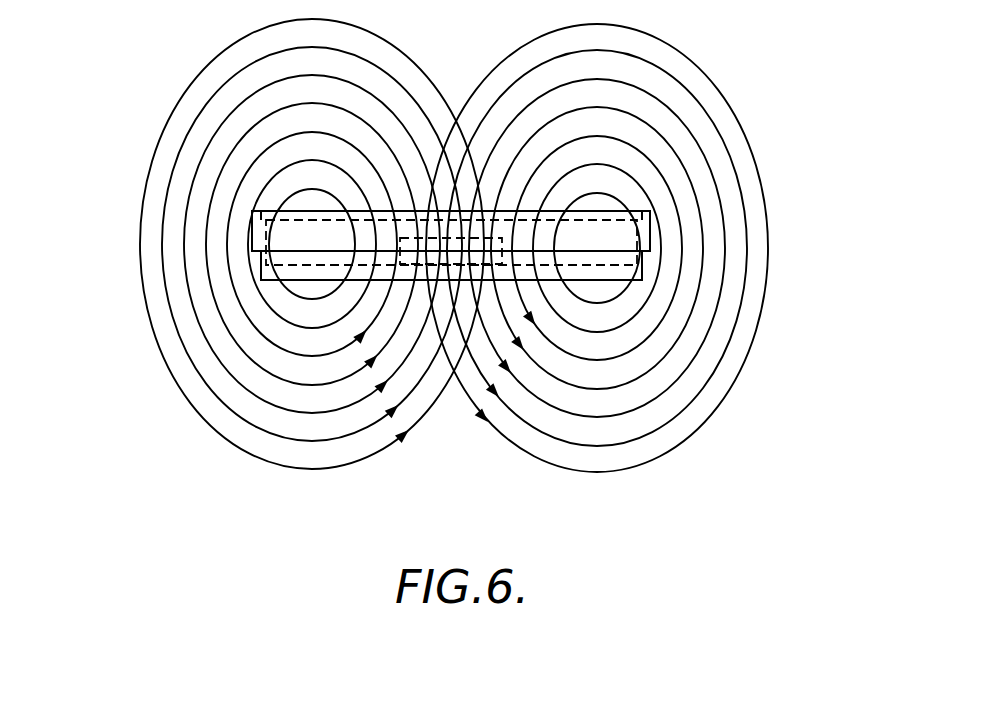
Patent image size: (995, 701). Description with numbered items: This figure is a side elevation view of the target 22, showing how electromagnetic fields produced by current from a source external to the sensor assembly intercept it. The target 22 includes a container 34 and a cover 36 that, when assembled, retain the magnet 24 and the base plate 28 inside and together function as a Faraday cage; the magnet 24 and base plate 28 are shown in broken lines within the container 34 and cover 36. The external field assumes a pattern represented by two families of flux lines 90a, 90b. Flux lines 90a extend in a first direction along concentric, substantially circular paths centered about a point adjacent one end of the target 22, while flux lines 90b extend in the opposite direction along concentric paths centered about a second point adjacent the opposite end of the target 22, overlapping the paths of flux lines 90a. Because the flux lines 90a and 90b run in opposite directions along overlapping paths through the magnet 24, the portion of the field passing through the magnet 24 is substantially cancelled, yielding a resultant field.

The flux lines 90b is at (201, 72).
The flux lines 90a is at (706, 75).
The target 22 is at (634, 210).
The magnet 24 is at (479, 238).
The base plate 28 is at (293, 262).
The container 34 is at (252, 263).
The cover 36 is at (651, 233).